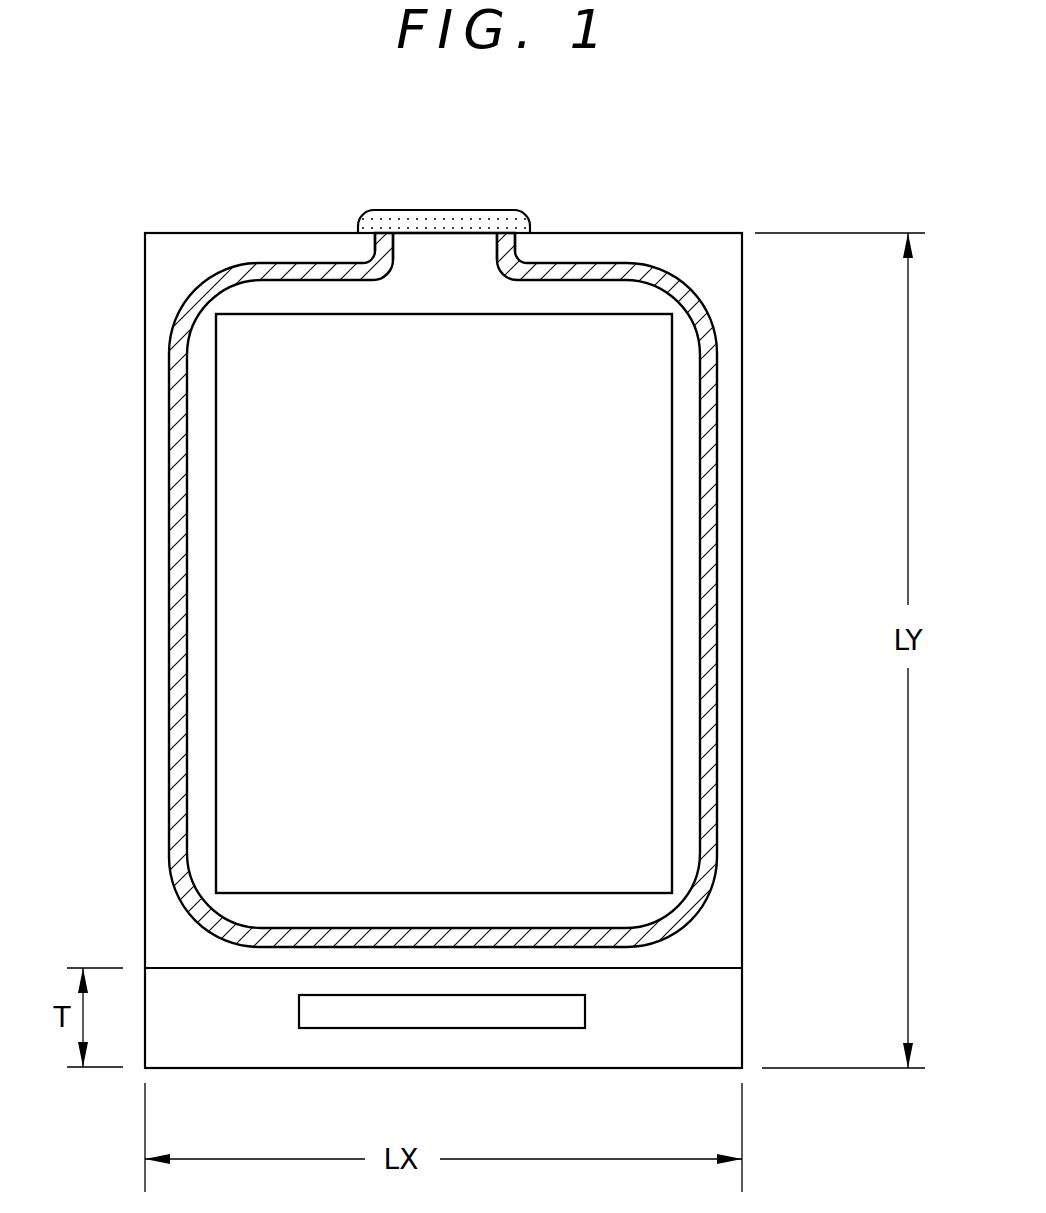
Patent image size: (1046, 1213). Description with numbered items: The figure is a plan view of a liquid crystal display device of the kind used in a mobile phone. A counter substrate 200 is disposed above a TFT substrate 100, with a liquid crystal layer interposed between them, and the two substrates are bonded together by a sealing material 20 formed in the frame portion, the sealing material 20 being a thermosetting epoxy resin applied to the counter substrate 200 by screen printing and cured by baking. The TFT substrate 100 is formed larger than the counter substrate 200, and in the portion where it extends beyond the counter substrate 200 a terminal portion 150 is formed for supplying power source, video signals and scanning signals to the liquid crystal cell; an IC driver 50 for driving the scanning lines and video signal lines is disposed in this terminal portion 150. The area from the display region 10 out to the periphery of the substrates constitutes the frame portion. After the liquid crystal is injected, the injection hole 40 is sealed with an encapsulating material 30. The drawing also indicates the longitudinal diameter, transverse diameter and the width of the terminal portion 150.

The display region 10 is at (672, 552).
The sealing material 20 is at (717, 350).
The encapsulating material 30 is at (490, 208).
The injection hole 40 is at (427, 252).
The IC driver 50 is at (557, 1030).
The TFT substrate 100 is at (742, 988).
The terminal portion 150 is at (700, 1027).
The counter substrate 200 is at (742, 735).